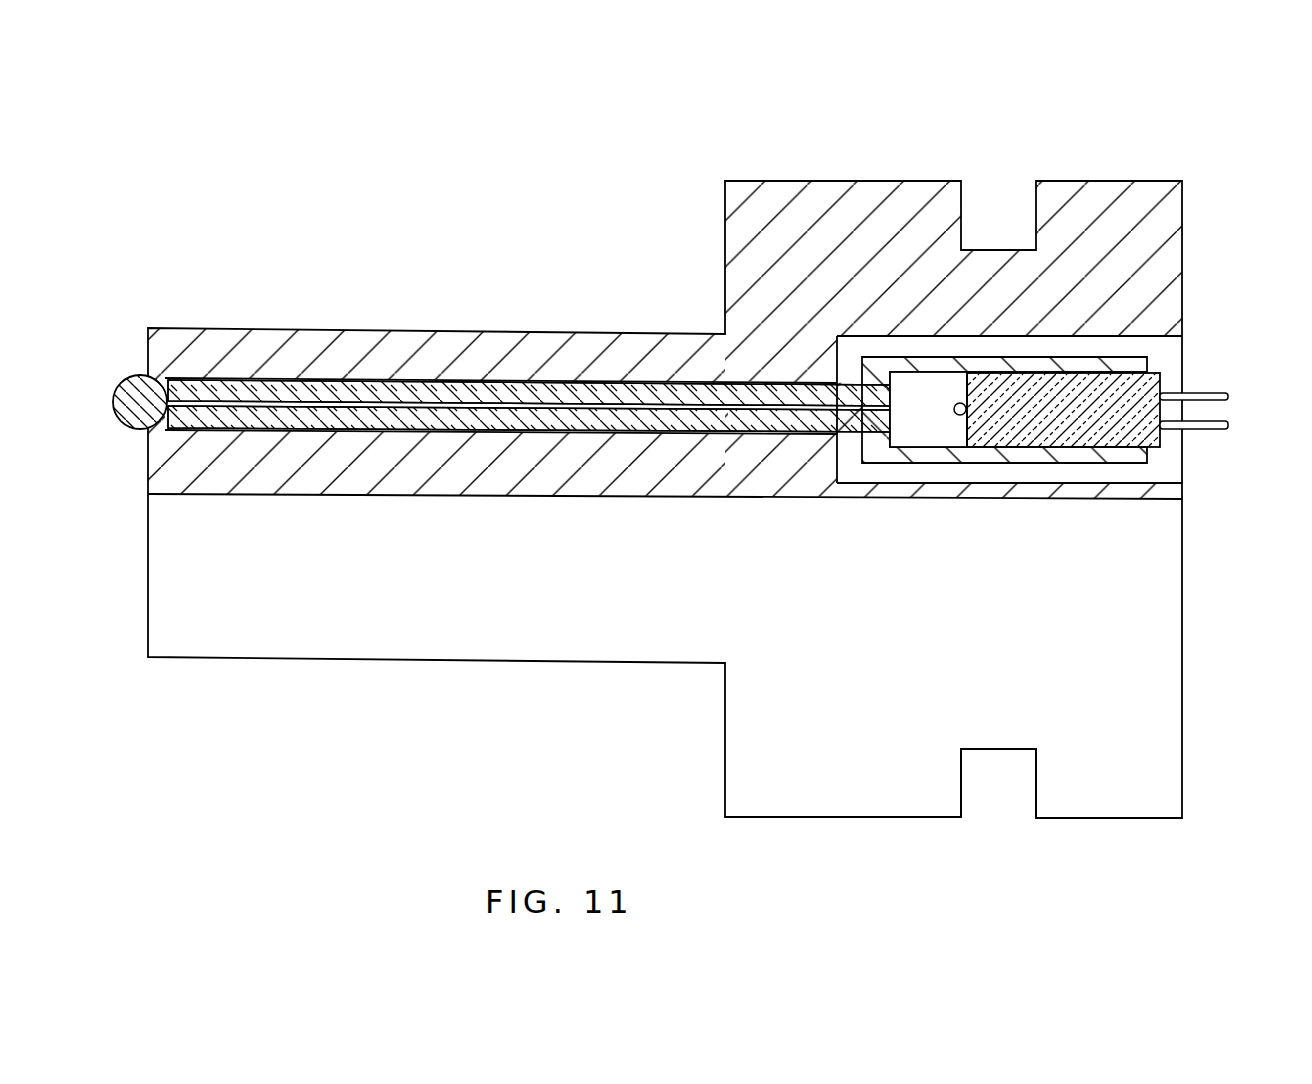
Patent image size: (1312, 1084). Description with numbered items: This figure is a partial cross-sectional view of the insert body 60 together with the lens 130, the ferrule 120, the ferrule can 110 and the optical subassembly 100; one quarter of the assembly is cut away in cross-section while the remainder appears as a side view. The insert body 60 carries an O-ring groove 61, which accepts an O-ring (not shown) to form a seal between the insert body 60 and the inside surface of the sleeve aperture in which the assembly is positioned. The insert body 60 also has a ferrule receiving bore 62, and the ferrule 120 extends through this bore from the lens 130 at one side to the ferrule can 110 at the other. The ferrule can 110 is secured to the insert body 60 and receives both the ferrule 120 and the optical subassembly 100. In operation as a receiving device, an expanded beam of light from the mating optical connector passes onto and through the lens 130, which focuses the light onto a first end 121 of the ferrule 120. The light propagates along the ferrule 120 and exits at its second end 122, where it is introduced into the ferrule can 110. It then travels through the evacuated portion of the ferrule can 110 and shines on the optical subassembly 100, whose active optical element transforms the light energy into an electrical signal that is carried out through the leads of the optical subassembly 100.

The insert body 60 is at (1183, 617).
The O-ring groove 61 is at (1020, 752).
The ferrule receiving bore 62 is at (160, 432).
The optical subassembly 100 is at (1163, 386).
The ferrule can 110 is at (1130, 352).
The ferrule 120 is at (567, 436).
The first end 121 is at (168, 380).
The second end 122 is at (903, 418).
The lens 130 is at (113, 375).